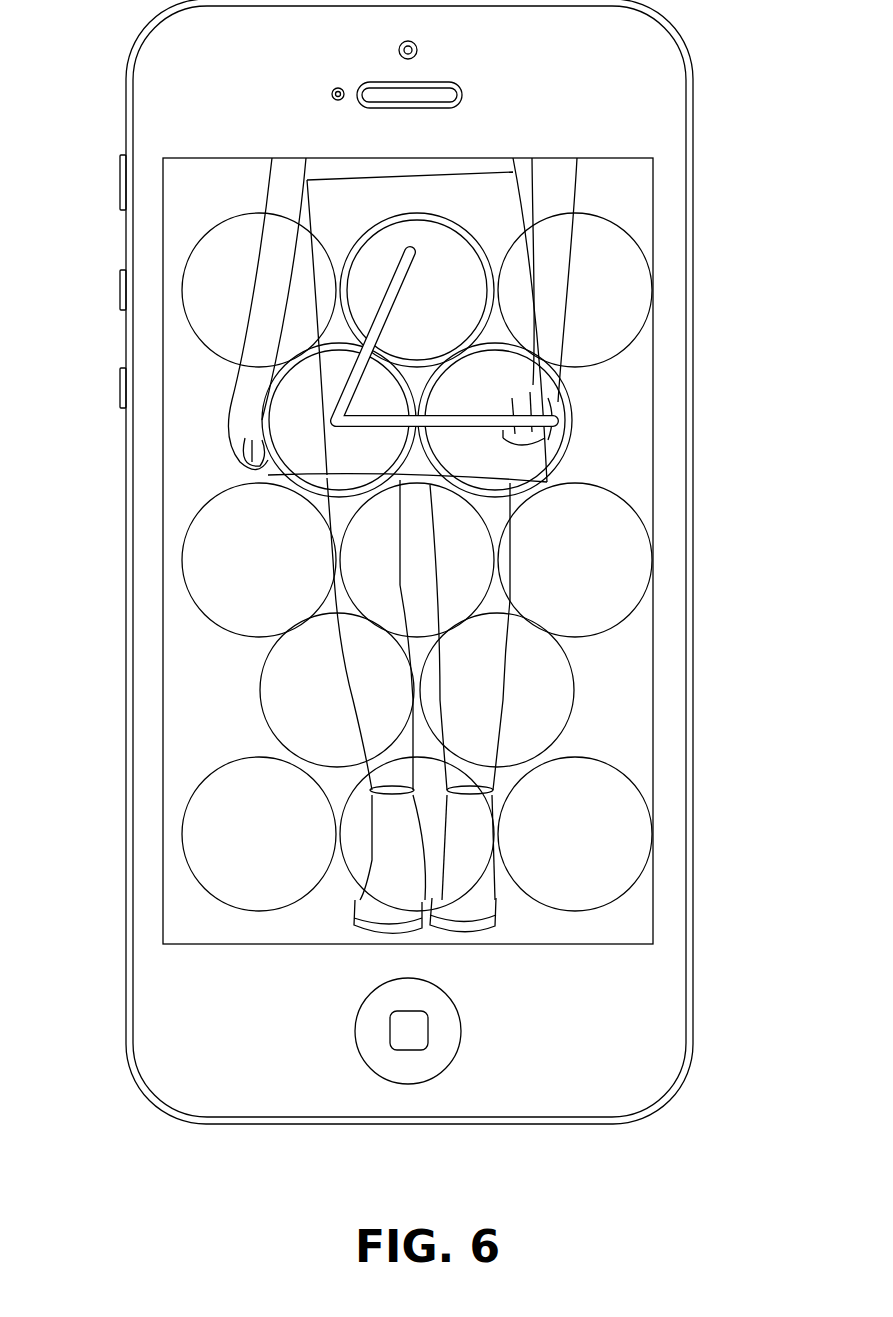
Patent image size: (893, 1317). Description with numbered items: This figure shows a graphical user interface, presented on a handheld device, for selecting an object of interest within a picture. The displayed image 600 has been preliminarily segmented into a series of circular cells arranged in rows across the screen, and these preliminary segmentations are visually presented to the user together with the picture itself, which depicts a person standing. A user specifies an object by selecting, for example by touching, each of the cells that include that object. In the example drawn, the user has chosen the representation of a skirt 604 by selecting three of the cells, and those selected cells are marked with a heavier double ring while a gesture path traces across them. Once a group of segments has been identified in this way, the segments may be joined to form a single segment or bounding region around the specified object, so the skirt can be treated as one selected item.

The image 600 is at (614, 713).
The representation of a skirt 604 is at (310, 180).